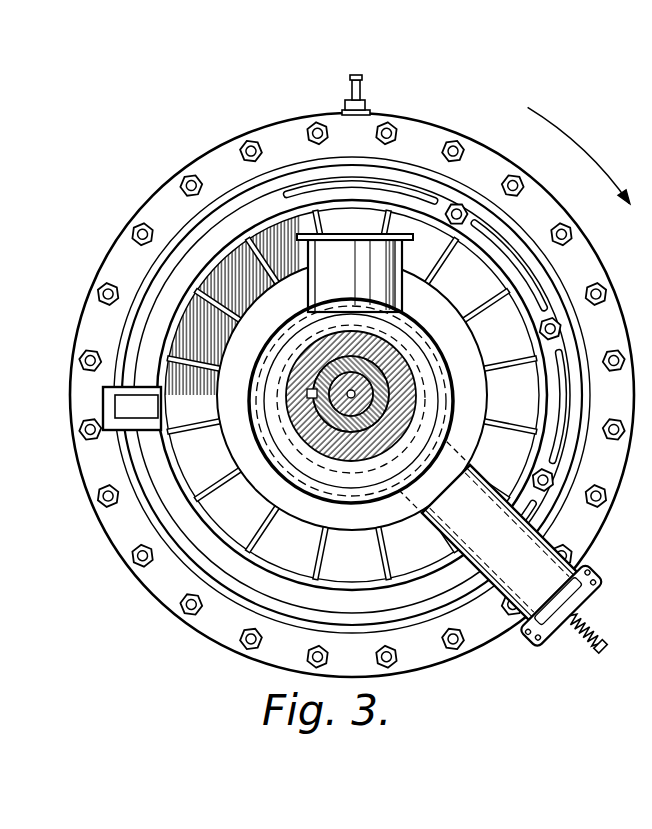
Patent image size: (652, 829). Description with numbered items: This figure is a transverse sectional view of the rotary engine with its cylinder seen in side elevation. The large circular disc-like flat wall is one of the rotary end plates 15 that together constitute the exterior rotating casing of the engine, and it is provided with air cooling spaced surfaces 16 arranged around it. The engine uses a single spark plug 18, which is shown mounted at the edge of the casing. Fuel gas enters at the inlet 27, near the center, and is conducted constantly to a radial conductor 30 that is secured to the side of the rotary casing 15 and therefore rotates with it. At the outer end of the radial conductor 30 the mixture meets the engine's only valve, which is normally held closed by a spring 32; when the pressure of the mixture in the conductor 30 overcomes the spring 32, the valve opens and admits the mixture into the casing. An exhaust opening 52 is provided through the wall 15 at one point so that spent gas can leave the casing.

The rotary end plate 15 is at (438, 138).
The air cooling spaced surfaces 16 is at (556, 267).
The spark plug 18 is at (366, 109).
The inlet 27 is at (355, 273).
The radial conductor 30 is at (533, 558).
The spring 32 is at (596, 628).
The exhaust opening 52 is at (132, 405).